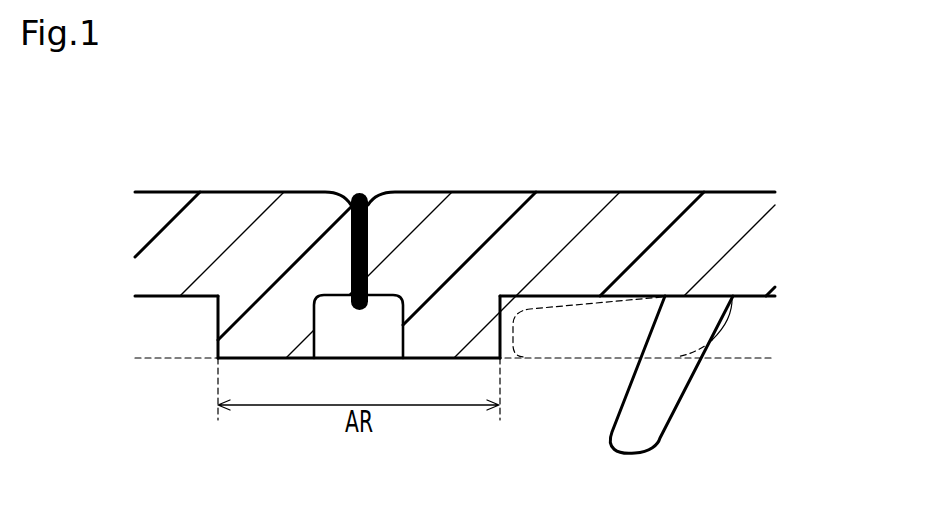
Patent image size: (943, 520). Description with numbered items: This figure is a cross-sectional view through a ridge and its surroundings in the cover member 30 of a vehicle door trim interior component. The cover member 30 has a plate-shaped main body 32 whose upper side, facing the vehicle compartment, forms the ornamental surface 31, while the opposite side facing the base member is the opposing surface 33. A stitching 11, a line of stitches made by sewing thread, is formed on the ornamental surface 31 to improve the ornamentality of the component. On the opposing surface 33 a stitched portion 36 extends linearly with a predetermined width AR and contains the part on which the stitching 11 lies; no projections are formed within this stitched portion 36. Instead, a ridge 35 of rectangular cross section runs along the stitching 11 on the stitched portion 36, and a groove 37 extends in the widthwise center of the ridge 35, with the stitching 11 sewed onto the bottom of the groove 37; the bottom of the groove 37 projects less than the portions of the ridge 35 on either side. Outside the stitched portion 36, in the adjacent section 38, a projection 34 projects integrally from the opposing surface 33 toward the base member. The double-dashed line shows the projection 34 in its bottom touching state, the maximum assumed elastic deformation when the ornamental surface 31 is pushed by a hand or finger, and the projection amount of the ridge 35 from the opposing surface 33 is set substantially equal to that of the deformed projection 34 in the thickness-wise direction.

The cover member 30 is at (772, 150).
The ornamental surface 31 is at (585, 192).
The main body 32 is at (233, 202).
The stitching 11 is at (357, 193).
The opposing surface 33 is at (156, 296).
The projection 34 is at (580, 358).
The ridge 35 is at (257, 358).
The stitched portion 36 is at (324, 439).
The groove 37 is at (402, 346).
The adjacent section 38 is at (177, 327).